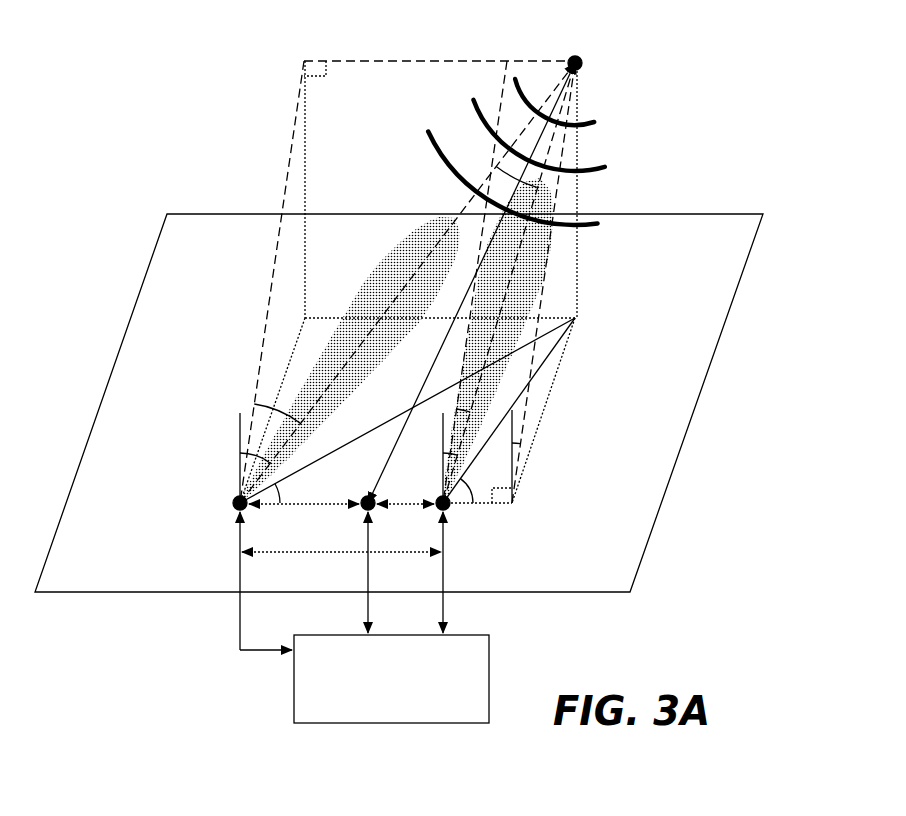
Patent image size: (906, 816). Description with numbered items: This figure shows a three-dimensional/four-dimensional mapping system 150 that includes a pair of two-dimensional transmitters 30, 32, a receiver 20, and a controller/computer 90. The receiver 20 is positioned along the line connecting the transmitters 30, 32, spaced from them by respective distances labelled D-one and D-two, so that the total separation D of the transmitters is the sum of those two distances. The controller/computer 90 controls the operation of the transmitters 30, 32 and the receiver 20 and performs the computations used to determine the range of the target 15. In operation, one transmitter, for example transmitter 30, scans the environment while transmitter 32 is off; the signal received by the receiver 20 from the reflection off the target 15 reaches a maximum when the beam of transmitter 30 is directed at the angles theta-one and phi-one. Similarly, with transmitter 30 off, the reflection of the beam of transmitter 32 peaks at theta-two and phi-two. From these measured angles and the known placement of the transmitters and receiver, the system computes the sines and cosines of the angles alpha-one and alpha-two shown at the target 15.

The target 15 is at (581, 60).
The receiver 20 is at (367, 496).
The transmitter 30 is at (234, 503).
The transmitter 32 is at (450, 505).
The controller/computer 90 is at (489, 652).
The mapping system 150 is at (694, 63).